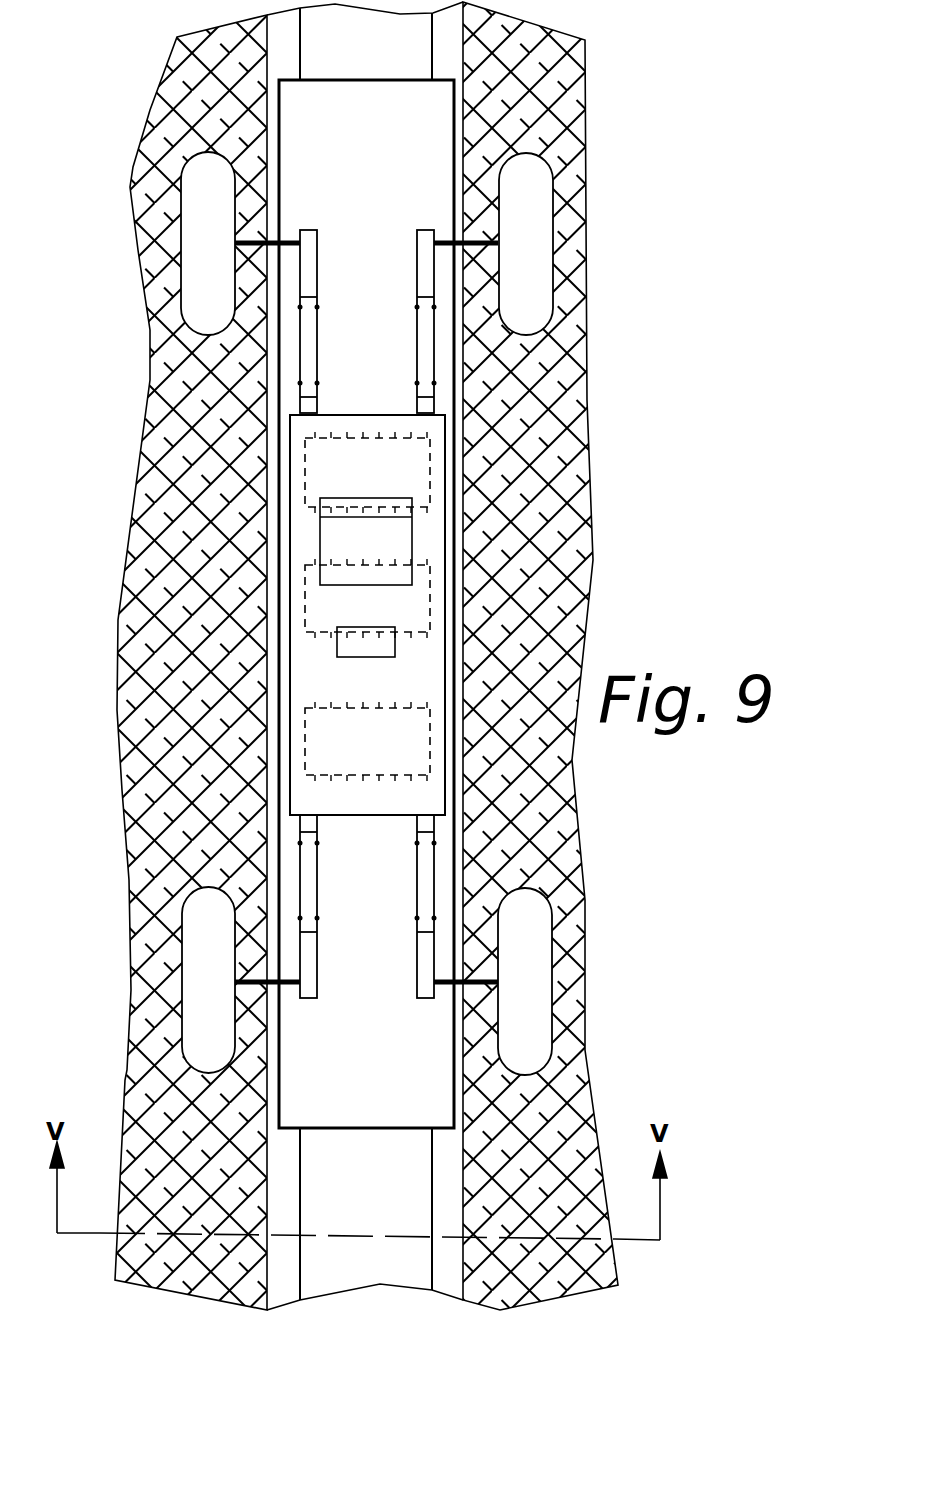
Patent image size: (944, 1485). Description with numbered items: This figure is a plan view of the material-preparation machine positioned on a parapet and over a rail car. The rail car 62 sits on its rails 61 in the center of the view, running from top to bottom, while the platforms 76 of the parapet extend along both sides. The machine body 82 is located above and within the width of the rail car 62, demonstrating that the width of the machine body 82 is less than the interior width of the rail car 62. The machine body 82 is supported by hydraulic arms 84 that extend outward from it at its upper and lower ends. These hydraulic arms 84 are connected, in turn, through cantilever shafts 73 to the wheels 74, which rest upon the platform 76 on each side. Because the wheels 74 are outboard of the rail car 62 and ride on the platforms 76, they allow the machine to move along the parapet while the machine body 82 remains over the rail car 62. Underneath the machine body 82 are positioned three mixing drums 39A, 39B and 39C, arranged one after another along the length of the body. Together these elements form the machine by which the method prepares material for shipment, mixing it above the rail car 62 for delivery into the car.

The mixing drum 39A is at (420, 745).
The mixing drum 39B is at (420, 603).
The mixing drum 39C is at (420, 470).
The rails 61 is at (300, 1273).
The rail car 62 is at (323, 1130).
The cantilever shafts 73 is at (441, 238).
The wheels 74 is at (550, 904).
The platforms 76 is at (580, 1047).
The machine body 82 is at (407, 682).
The hydraulic arms 84 is at (415, 333).